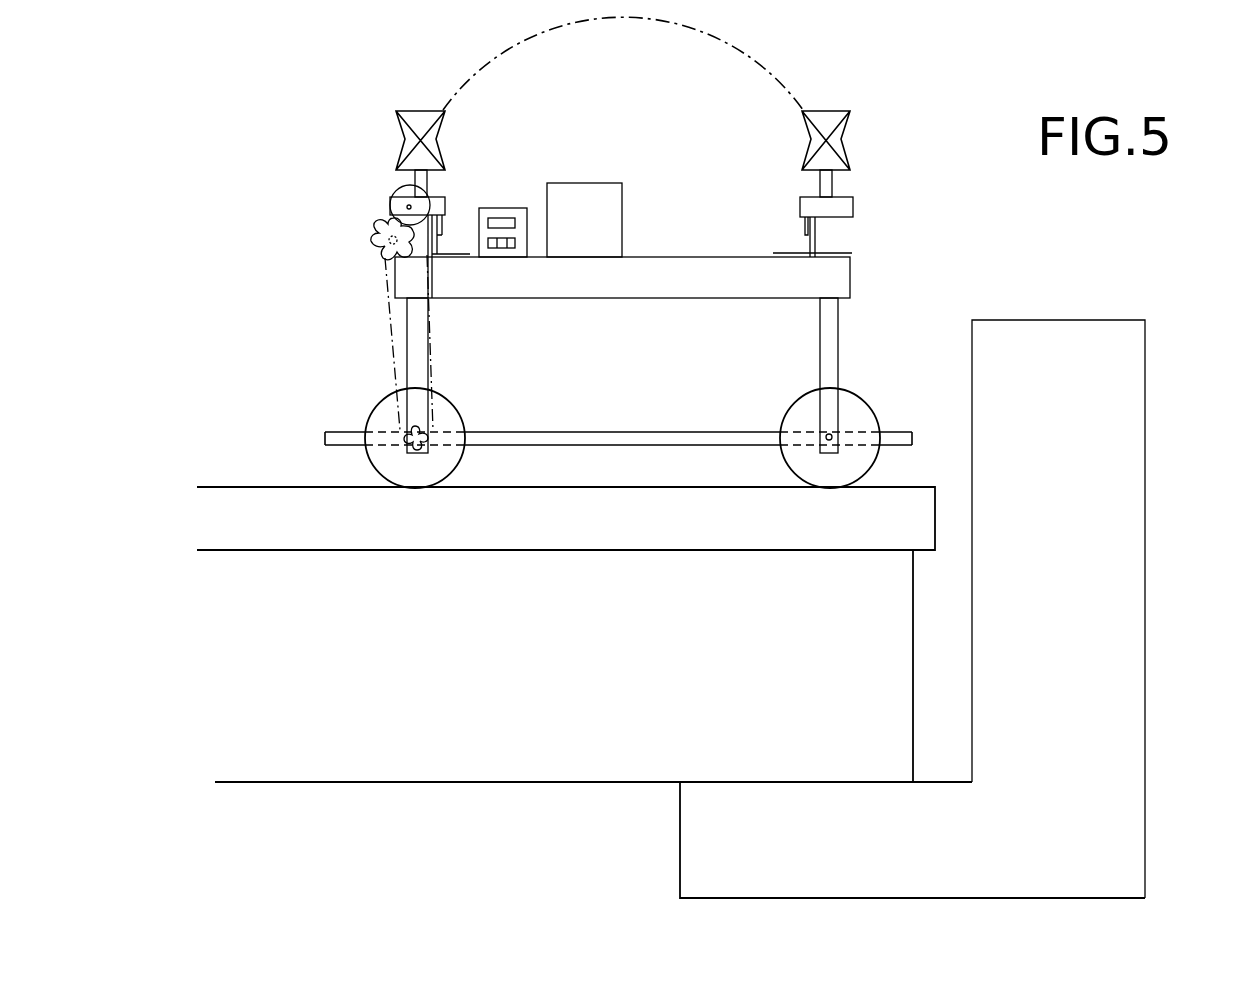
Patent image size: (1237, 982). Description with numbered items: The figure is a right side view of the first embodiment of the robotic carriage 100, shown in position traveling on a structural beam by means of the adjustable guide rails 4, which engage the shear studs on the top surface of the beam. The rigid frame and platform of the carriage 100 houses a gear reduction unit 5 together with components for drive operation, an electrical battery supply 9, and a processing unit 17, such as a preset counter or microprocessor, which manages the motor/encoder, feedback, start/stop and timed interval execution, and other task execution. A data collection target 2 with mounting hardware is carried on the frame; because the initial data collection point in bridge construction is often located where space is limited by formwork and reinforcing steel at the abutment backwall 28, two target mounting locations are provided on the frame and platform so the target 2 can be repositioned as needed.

The data collection target 2 is at (853, 133).
The adjustable guide rail 4 is at (651, 437).
The gear reduction unit 5 is at (390, 200).
The electrical battery supply 9 is at (594, 183).
The processing unit 17 is at (512, 208).
The abutment backwall 28 is at (800, 207).
The robotic carriage 100 is at (851, 272).